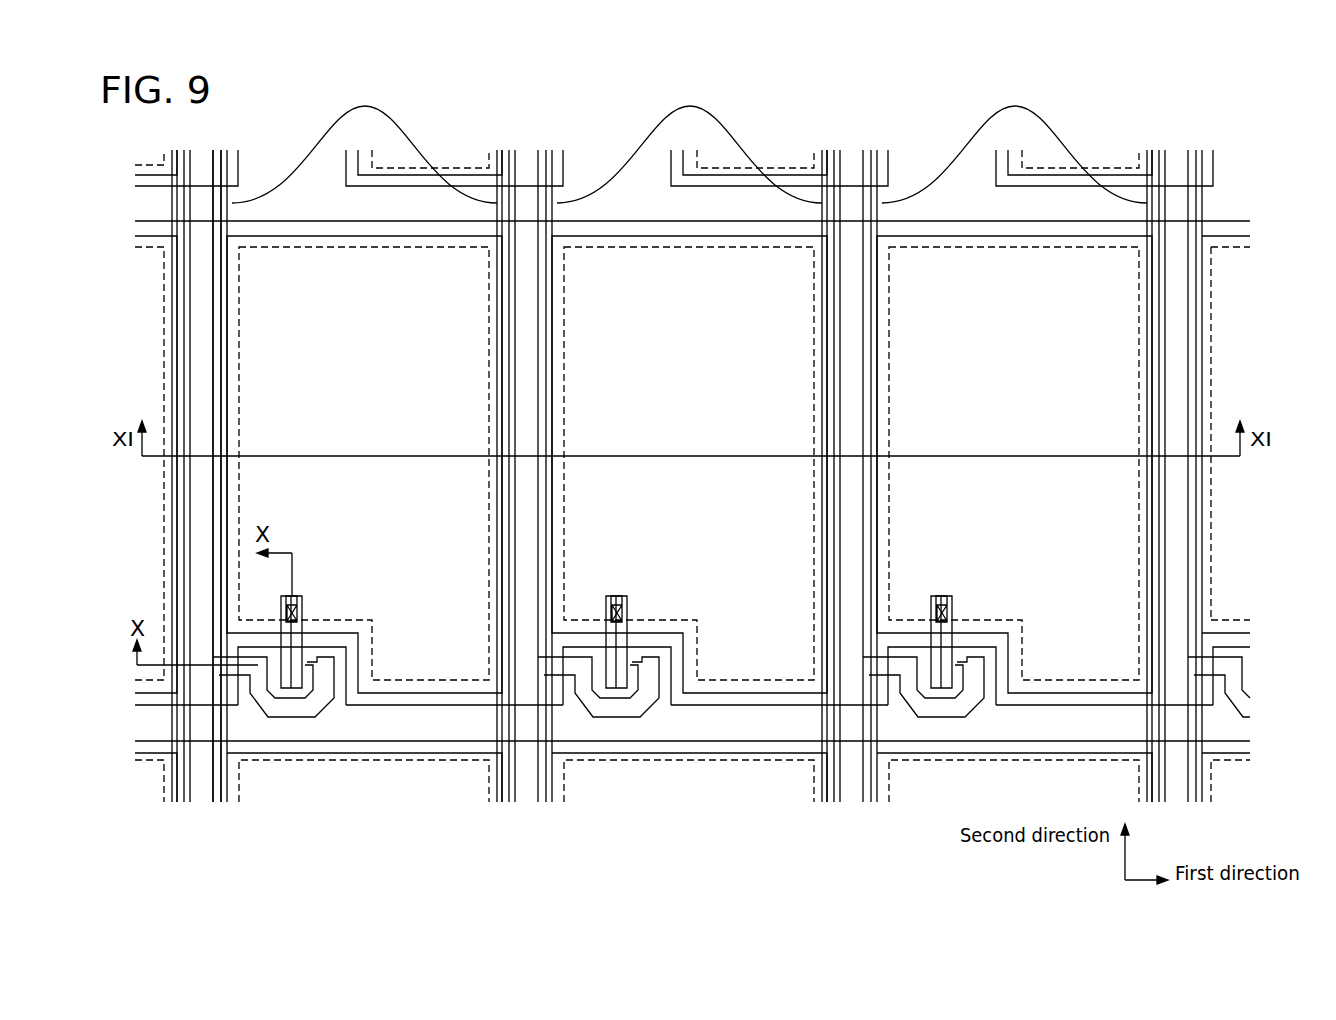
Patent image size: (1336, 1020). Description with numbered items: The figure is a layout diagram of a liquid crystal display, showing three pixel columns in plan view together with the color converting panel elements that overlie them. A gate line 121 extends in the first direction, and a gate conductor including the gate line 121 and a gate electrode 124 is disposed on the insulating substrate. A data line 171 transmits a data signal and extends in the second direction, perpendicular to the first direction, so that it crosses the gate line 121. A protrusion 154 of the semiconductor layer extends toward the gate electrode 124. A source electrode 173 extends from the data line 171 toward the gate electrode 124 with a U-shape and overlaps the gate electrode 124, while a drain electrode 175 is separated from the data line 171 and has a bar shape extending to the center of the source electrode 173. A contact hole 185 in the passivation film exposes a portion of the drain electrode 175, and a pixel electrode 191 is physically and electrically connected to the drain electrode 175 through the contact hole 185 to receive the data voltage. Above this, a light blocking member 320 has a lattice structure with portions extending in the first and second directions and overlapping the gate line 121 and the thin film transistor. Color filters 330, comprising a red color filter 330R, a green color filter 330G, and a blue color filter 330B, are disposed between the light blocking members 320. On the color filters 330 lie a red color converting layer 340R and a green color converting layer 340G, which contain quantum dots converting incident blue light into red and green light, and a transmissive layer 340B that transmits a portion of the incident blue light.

The gate line 121 is at (478, 742).
The gate electrode 124 is at (348, 674).
The protrusion 154 is at (307, 662).
The data line 171 is at (190, 414).
The source electrode 173 is at (283, 718).
The drain electrode 175 is at (305, 602).
The contact hole 185 is at (298, 600).
The pixel electrode 191 is at (229, 331).
The light blocking member 320 is at (489, 326).
The color filters 330 is at (698, 812).
The red color filter 330R is at (682, 440).
The green color filter 330G is at (1007, 440).
The blue color filter 330B is at (346, 457).
The transmissive layer 340B is at (364, 140).
The red color converting layer 340R is at (689, 140).
The green color converting layer 340G is at (1014, 140).